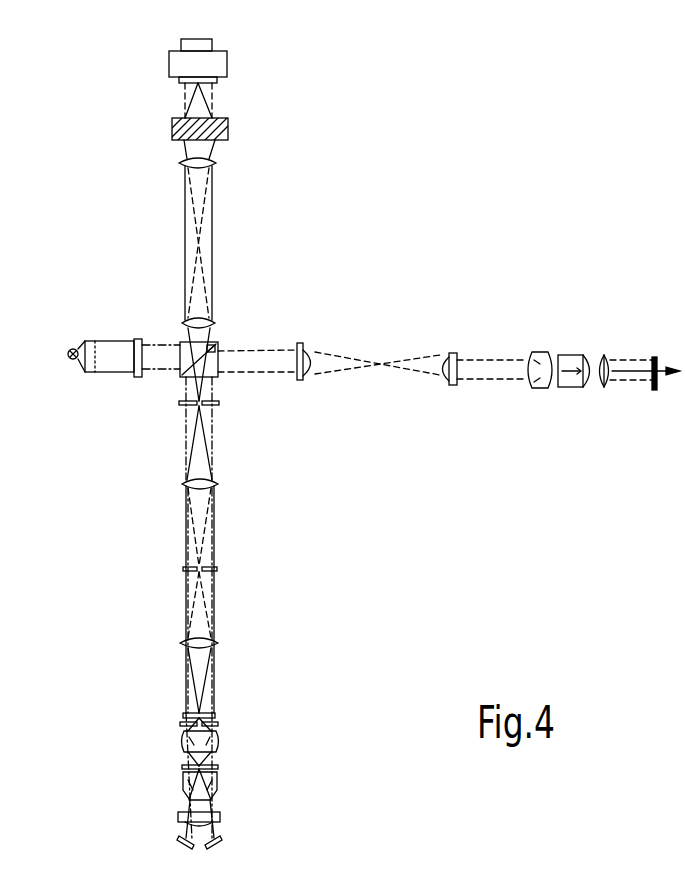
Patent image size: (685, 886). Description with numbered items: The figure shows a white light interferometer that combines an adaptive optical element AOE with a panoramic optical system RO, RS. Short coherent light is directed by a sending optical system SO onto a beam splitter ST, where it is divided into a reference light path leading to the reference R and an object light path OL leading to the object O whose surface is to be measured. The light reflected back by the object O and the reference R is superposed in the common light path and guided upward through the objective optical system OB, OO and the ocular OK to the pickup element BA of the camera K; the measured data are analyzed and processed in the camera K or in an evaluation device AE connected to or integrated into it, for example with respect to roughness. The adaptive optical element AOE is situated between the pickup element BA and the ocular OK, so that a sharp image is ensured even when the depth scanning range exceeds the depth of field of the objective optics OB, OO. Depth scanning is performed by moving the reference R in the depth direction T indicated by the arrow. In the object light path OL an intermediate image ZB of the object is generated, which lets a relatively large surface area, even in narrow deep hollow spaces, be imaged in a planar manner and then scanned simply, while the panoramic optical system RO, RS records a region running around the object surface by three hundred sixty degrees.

The evaluation device AE is at (213, 42).
The camera K is at (228, 59).
The pickup element BA is at (217, 82).
The adaptive optical element AOE is at (228, 127).
The ocular OK is at (217, 163).
The objective optical system OB is at (216, 323).
The beam splitter ST is at (179, 342).
The sending optical system SO is at (113, 373).
The panoramic optical system RO is at (537, 395).
The reference R is at (655, 357).
The depth direction T is at (665, 390).
The object light path OL is at (170, 525).
The objective optical system OO is at (223, 525).
The intermediate image ZB is at (220, 723).
The panoramic optical system RS is at (218, 768).
The object O is at (225, 838).